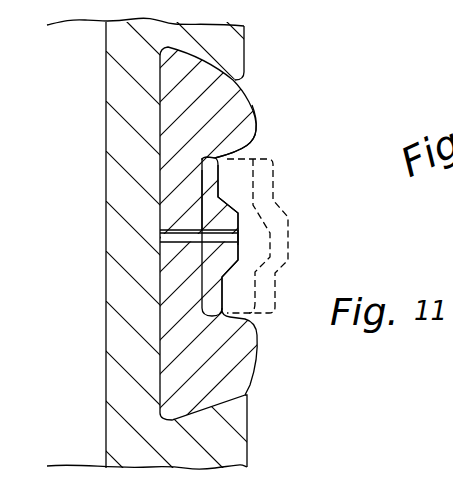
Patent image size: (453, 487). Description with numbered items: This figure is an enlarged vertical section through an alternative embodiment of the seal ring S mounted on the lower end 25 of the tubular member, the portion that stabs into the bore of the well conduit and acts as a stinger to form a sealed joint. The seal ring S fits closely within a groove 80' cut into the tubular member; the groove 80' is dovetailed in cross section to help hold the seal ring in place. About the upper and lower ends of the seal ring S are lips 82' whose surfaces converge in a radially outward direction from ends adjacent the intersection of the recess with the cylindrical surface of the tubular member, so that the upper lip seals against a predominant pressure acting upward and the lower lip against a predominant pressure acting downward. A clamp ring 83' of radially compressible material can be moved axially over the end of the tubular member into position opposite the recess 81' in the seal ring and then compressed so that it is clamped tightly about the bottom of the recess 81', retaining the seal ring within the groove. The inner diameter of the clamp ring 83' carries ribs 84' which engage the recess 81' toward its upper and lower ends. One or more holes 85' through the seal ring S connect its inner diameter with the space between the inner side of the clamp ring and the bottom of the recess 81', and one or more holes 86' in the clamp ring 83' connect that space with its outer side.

The lower end 25 is at (245, 54).
The groove 80' is at (230, 226).
The seal ring S is at (262, 117).
The lips 82' is at (267, 141).
The clamp ring 83' is at (275, 236).
The ribs 84' is at (127, 197).
The recess 81' is at (144, 213).
The holes 85' is at (144, 233).
The holes 86' is at (291, 236).